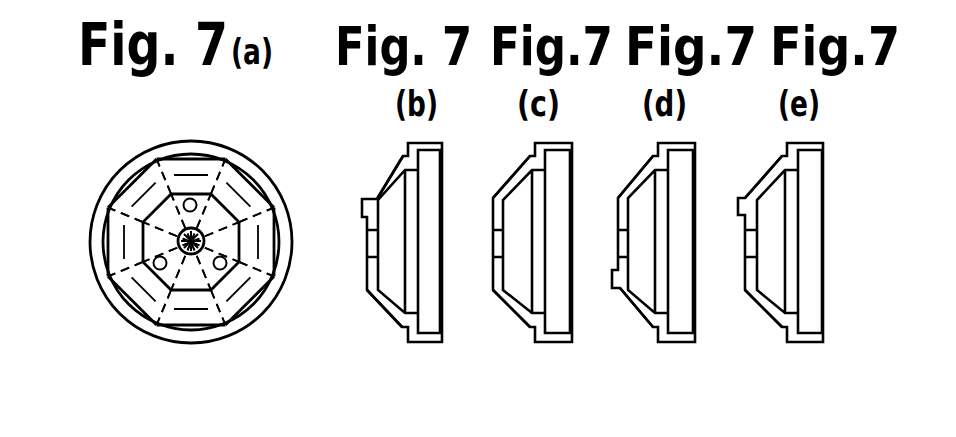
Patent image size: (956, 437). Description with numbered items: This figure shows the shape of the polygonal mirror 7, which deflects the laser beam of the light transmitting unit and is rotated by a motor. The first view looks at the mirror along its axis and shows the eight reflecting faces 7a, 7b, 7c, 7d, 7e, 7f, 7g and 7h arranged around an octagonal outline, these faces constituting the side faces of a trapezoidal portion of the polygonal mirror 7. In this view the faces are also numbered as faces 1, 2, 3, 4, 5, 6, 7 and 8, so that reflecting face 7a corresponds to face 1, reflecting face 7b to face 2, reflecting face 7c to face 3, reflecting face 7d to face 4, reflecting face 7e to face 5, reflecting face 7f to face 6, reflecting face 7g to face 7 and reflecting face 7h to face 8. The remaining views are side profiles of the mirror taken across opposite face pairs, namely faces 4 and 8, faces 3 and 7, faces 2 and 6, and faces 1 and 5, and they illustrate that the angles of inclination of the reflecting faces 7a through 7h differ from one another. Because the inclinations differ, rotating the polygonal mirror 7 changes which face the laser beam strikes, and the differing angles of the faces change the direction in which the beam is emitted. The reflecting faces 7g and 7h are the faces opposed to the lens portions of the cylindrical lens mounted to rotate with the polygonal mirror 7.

In FIG. 7A, the reflecting face 7a is at (208, 163).
In FIG. 7A, the reflecting face 7b is at (145, 177).
In FIG. 7A, the reflecting face 7c is at (110, 225).
In FIG. 7A, the reflecting face 7d is at (137, 303).
In FIG. 7A, the reflecting face 7e is at (175, 318).
In FIG. 7A, the reflecting face 7f is at (233, 307).
In FIG. 7A, the reflecting face 7g is at (265, 260).
In FIG. 7A, the reflecting face 7h is at (250, 190).
In FIG. 7A, the face 1 is at (191, 200).
In FIG. 7E, the face 1 is at (760, 175).
In FIG. 7A, the face 2 is at (149, 200).
In FIG. 7D, the face 2 is at (633, 175).
In FIG. 7A, the face 3 is at (149, 242).
In FIG. 7C, the face 3 is at (508, 175).
In FIG. 7A, the face 4 is at (149, 283).
In FIG. 7B, the face 4 is at (382, 175).
In FIG. 7A, the face 5 is at (191, 283).
In FIG. 7E, the face 5 is at (757, 310).
In FIG. 7A, the face 6 is at (232, 283).
In FIG. 7D, the face 6 is at (632, 310).
In FIG. 7A, the polygonal mirror 7 is at (232, 242).
In FIG. 7C, the polygonal mirror 7 is at (507, 310).
In FIG. 7A, the face 8 is at (232, 200).
In FIG. 7B, the face 8 is at (382, 308).